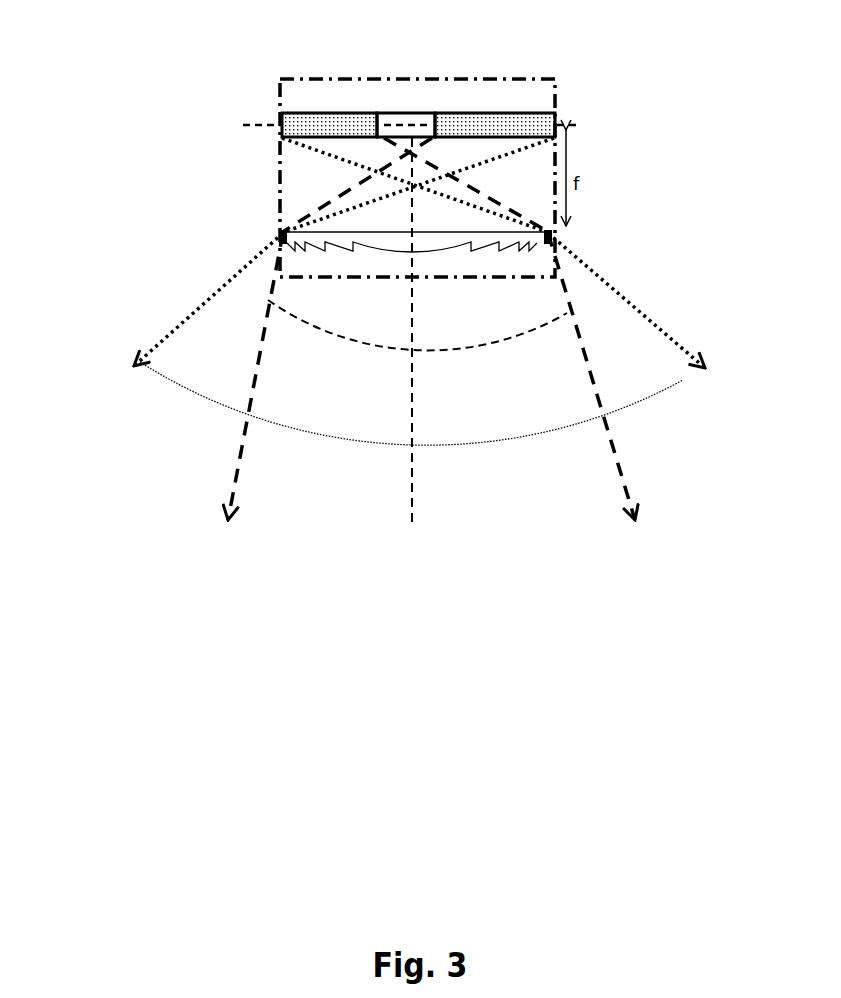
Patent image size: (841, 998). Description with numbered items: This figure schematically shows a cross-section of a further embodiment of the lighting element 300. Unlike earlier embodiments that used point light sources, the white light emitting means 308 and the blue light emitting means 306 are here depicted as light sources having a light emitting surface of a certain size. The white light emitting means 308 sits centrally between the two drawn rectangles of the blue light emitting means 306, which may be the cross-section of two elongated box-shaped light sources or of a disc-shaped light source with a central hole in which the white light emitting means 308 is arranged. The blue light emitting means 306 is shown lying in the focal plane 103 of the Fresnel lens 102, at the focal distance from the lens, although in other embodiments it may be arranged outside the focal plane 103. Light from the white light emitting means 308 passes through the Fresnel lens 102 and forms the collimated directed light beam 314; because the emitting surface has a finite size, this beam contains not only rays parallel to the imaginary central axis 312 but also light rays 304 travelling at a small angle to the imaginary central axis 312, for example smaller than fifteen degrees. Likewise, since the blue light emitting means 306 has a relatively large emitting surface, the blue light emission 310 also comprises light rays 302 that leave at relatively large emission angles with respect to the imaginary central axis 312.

The lighting element 300 is at (557, 91).
The blue light emitting means 306 is at (338, 117).
The white light emitting means 308 is at (408, 125).
The focal plane 103 is at (262, 125).
The Fresnel lens 102 is at (280, 240).
The light rays 302 is at (187, 325).
The light rays 304 is at (240, 440).
The blue light emission 310 is at (350, 430).
The imaginary central axis 312 is at (413, 505).
The collimated directed light beam 314 is at (493, 337).